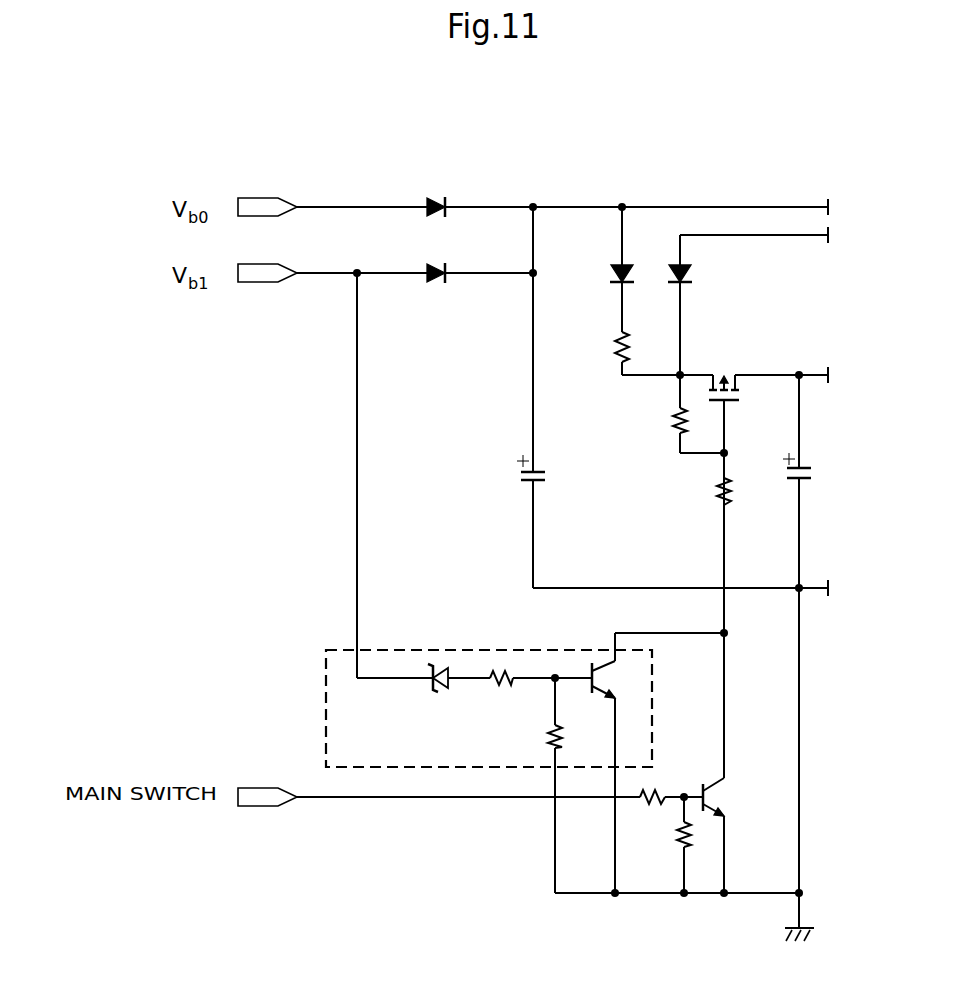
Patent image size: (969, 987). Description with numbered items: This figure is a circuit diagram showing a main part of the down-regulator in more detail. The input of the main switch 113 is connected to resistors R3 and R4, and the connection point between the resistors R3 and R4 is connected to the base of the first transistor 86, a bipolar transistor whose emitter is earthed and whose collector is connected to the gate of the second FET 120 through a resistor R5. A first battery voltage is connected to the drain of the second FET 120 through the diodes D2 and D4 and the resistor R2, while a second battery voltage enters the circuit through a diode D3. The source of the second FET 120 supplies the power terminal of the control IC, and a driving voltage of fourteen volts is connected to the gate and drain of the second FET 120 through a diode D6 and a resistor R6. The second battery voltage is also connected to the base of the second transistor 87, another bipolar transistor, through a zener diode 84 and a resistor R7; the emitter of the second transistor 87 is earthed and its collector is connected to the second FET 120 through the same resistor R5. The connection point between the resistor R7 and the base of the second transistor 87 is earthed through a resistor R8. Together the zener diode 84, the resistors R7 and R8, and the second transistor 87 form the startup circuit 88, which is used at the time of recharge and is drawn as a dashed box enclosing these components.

The diode D2 is at (432, 195).
The diode D3 is at (441, 262).
The diode D4 is at (606, 277).
The diode D6 is at (703, 280).
The resistor R2 is at (612, 348).
The resistor R3 is at (656, 786).
The resistor R4 is at (672, 832).
The resistor R5 is at (705, 500).
The resistor R6 is at (667, 430).
The resistor R7 is at (493, 690).
The resistor R8 is at (545, 735).
The second FET 120 is at (741, 393).
The startup circuit 88 is at (398, 650).
The second transistor 87 is at (580, 665).
The first transistor 86 is at (720, 795).
The zener diode 84 is at (436, 690).
The main switch 113 is at (198, 821).